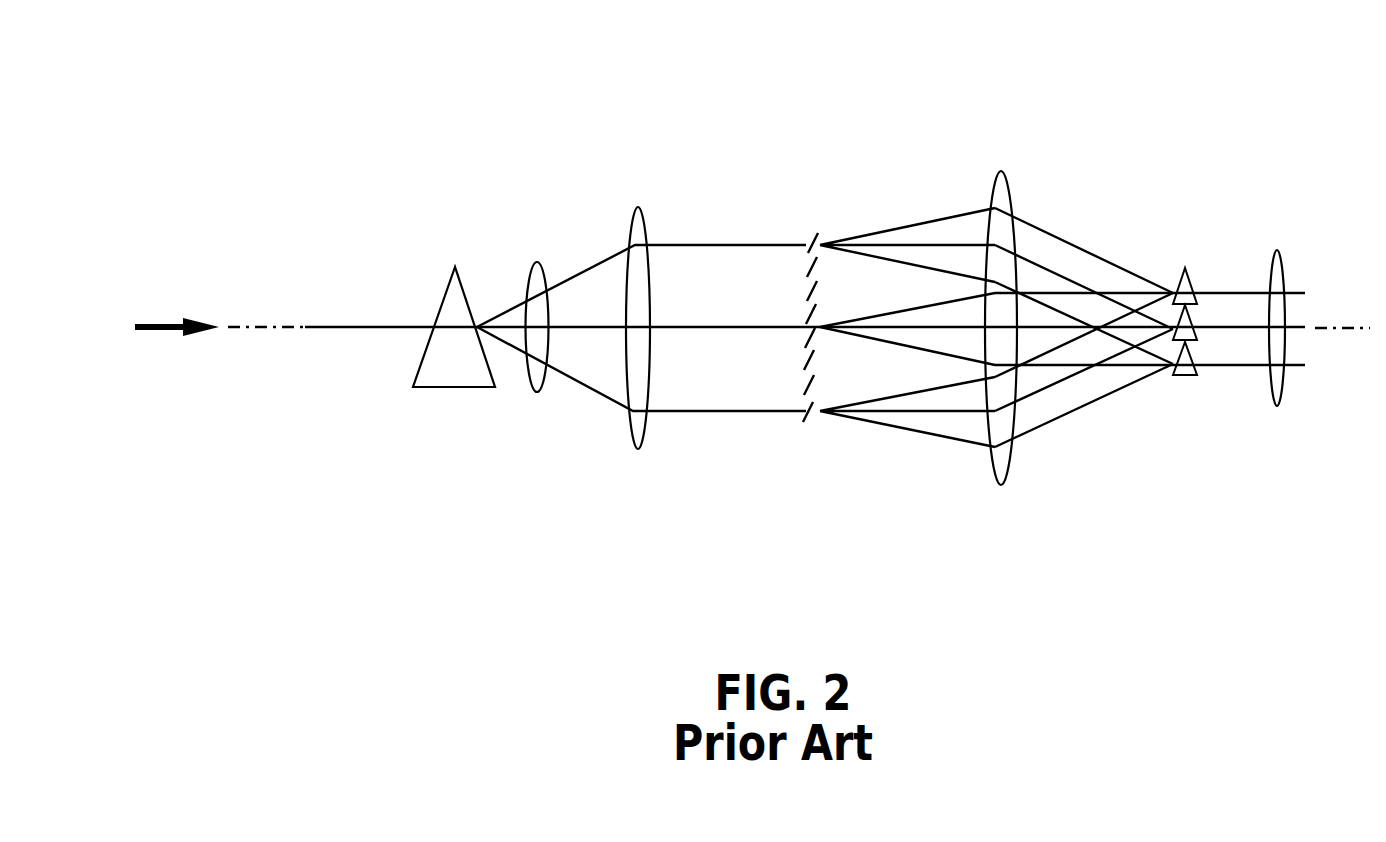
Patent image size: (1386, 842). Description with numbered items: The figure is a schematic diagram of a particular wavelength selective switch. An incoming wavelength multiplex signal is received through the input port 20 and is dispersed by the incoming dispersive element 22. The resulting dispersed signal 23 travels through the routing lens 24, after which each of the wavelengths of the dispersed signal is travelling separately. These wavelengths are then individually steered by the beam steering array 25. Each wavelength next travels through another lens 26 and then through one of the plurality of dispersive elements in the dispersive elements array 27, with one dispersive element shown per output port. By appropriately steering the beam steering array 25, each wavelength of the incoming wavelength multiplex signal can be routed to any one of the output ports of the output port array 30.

The input port 20 is at (152, 323).
The incoming dispersive element 22 is at (452, 402).
The dispersed signal 23 is at (537, 252).
The routing lens 24 is at (638, 188).
The beam steering array 25 is at (808, 450).
The lens 26 is at (1012, 190).
The dispersive elements array 27 is at (1183, 403).
The output port array 30 is at (1282, 258).